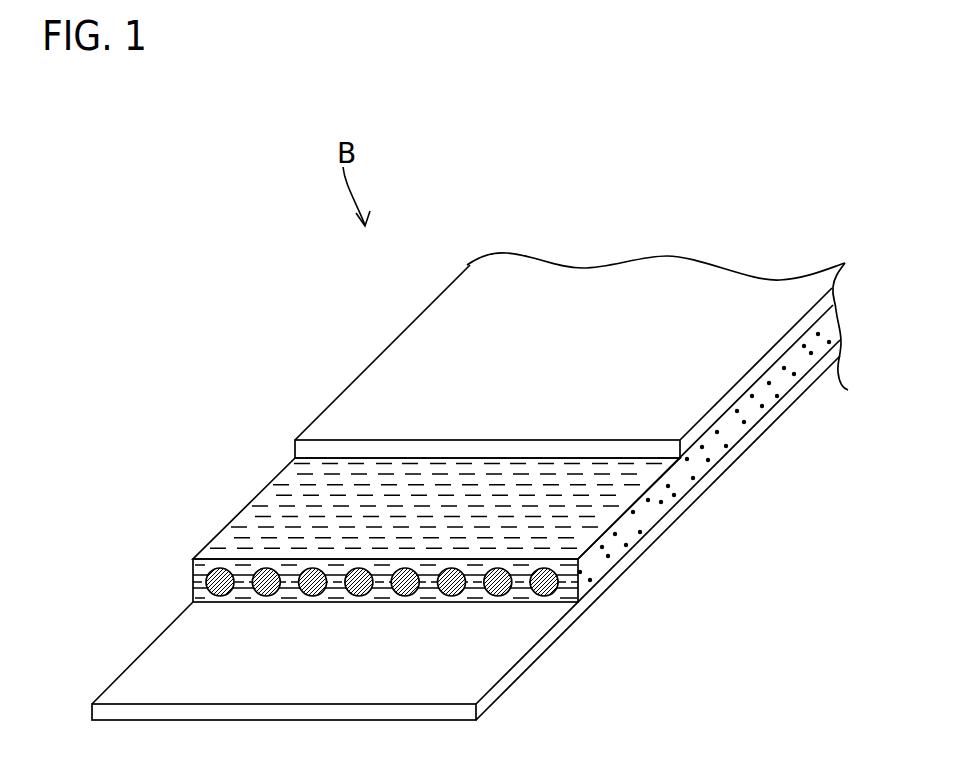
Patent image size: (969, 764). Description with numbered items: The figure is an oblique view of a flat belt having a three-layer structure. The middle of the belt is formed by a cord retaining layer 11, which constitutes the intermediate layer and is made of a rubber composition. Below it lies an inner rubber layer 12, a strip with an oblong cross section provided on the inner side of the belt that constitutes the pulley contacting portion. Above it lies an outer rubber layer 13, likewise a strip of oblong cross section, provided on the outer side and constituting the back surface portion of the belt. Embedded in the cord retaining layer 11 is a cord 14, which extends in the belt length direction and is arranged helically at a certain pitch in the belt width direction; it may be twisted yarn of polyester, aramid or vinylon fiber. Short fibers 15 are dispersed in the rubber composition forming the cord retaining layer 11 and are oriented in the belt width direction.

The cord retaining layer 11 is at (193, 561).
The inner rubber layer 12 is at (92, 705).
The outer rubber layer 13 is at (295, 443).
The cord 14 is at (550, 590).
The short fibers 15 is at (525, 600).